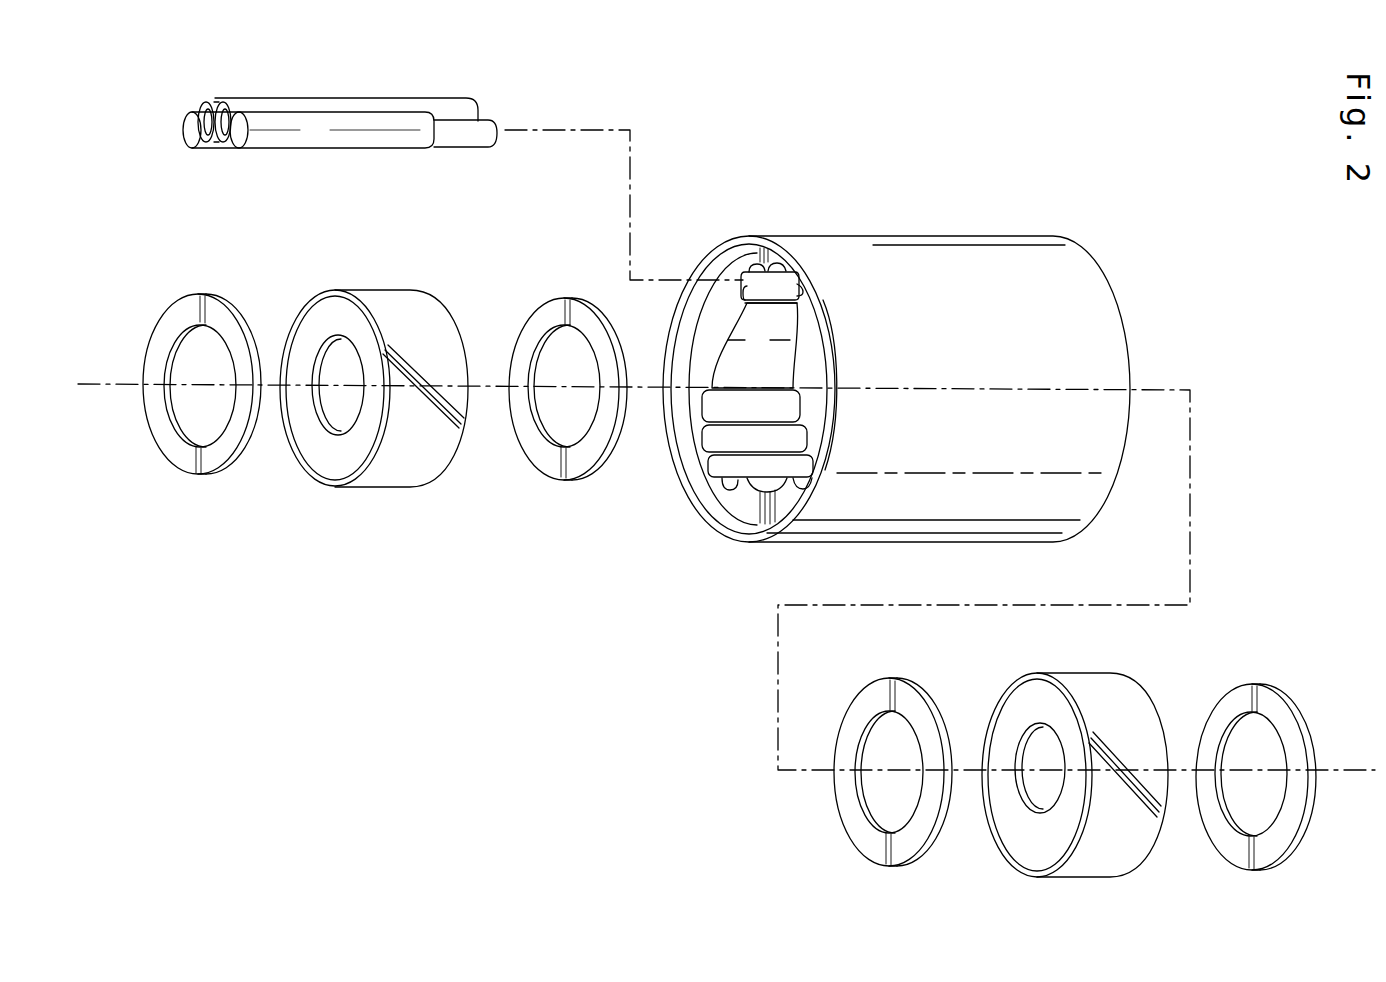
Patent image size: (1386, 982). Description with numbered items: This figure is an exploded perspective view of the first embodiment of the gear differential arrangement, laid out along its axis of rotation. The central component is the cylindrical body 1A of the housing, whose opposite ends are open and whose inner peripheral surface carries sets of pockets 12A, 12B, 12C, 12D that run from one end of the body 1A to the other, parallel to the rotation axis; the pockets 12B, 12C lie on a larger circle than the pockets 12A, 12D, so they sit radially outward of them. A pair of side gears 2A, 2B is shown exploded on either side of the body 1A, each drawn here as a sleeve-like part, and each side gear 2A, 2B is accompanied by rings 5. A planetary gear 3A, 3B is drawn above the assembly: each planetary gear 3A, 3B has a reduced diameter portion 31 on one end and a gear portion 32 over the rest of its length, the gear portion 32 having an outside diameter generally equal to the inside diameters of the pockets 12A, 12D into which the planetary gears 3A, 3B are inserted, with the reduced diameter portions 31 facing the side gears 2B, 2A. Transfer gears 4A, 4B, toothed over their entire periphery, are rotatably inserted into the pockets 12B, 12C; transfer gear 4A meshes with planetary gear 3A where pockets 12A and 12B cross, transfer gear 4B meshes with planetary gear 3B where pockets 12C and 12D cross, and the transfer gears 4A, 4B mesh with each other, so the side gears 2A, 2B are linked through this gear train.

The cylindrical body 1A is at (920, 236).
The side gear 2A is at (1097, 690).
The side gear 2B is at (403, 470).
The planetary gear 3A is at (184, 130).
The planetary gear 3B is at (240, 147).
The transfer gear 4A is at (209, 101).
The transfer gear 4B is at (228, 100).
The washer 5 is at (193, 295).
The pocket 12A is at (743, 293).
The pocket 12B is at (757, 265).
The pocket 12C is at (777, 256).
The pocket 12D is at (797, 290).
The reduced diameter portion 31 is at (470, 140).
The gear portion 32 is at (360, 135).